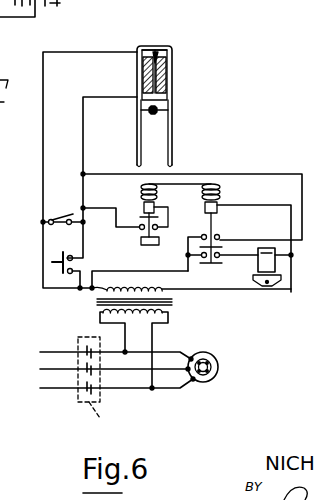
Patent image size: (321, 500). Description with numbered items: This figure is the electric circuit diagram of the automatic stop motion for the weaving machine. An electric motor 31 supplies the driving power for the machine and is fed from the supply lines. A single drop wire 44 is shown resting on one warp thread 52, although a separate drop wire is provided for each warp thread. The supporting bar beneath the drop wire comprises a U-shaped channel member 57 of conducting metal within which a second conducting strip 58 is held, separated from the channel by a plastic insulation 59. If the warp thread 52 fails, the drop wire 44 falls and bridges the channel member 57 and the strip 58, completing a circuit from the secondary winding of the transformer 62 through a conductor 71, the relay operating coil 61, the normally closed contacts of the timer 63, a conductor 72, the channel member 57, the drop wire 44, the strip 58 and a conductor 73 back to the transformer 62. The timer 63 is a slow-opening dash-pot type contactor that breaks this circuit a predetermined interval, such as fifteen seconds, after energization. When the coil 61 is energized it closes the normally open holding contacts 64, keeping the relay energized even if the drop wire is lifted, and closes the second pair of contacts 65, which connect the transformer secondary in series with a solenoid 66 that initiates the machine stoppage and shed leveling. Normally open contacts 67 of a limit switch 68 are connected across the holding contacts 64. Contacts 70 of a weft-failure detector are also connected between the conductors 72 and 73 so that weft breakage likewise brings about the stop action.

The electric motor 31 is at (201, 382).
The drop wire 44 is at (158, 95).
The warp thread 52 is at (168, 110).
The U-shaped channel member 57 is at (143, 71).
The conducting strip 58 is at (172, 46).
The insulation 59 is at (166, 70).
The relay operating coil 61 is at (239, 238).
The transformer 62 is at (172, 300).
The timer 63 is at (140, 230).
The holding contacts 64 is at (225, 227).
The second pair of contacts 65 is at (220, 258).
The solenoid 66 is at (276, 262).
The limit switch contacts 67 is at (77, 280).
The limit switch 68 is at (52, 258).
The weft-failure detector contacts 70 is at (53, 226).
The conductor 71 is at (290, 291).
The conductor 72 is at (83, 121).
The conductor 73 is at (43, 136).